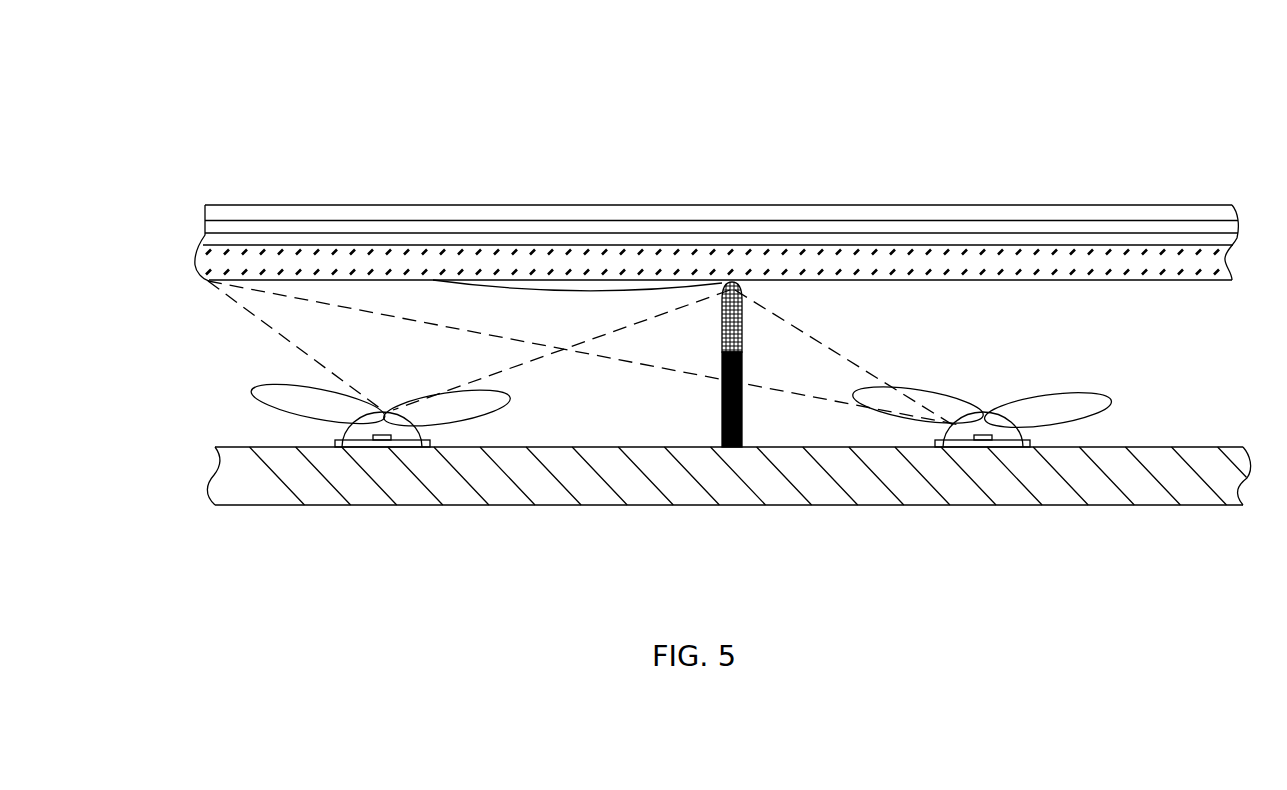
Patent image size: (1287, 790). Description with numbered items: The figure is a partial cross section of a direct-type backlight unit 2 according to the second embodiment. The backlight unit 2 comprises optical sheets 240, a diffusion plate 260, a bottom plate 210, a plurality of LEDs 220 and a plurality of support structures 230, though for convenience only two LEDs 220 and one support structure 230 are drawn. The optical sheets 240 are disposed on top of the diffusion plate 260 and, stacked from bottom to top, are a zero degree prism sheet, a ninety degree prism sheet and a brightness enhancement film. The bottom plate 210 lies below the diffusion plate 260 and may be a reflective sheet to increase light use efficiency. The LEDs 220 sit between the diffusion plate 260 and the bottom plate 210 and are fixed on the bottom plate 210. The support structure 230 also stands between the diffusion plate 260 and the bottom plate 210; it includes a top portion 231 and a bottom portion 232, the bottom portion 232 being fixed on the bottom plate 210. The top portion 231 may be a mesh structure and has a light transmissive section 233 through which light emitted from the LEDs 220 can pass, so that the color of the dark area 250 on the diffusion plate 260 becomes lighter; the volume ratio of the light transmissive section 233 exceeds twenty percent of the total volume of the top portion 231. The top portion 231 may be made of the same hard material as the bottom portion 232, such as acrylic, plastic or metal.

The direct-type backlight unit 2 is at (247, 140).
The bottom plate 210 is at (240, 480).
The LED 220 is at (362, 433).
The support structure 230 is at (823, 437).
The top portion 231 is at (745, 343).
The bottom portion 232 is at (742, 413).
The light transmissive section 233 is at (745, 313).
The optical sheets 240 is at (1197, 206).
The dark area 250 is at (572, 288).
The diffusion plate 260 is at (987, 257).